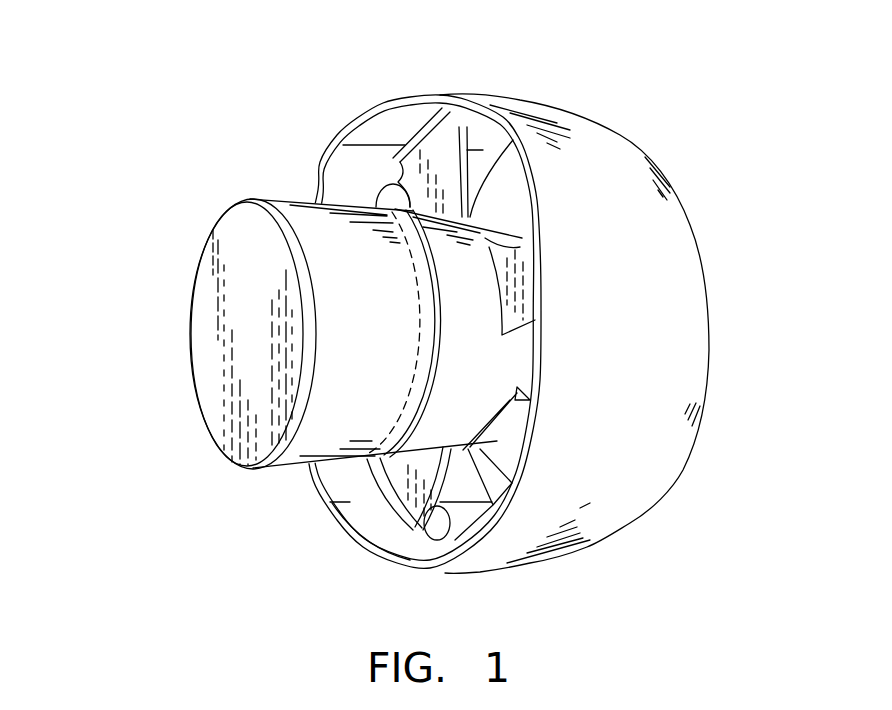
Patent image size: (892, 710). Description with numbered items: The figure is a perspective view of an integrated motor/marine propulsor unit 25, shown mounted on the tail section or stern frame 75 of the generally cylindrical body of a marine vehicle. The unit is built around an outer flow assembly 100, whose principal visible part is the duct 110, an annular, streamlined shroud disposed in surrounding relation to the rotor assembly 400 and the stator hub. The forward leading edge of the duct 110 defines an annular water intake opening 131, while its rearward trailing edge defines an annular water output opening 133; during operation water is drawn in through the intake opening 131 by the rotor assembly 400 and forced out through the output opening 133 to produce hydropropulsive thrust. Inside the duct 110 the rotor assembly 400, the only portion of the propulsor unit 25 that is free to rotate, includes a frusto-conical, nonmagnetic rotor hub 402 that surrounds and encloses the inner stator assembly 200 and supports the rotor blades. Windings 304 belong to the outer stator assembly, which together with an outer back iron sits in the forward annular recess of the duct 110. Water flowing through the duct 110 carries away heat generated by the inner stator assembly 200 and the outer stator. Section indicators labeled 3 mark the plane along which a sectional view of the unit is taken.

The section line 3- 3 is at (416, 31).
The integrated motor/marine propulsor unit 25 is at (596, 78).
The tail section or stern frame 75 is at (343, 433).
The outer flow assembly 100 is at (694, 165).
The duct 110 is at (643, 457).
The annular water intake opening 131 is at (315, 190).
The annular water output opening 133 is at (686, 294).
The inner stator assembly 200 is at (512, 364).
The windings 304 is at (366, 173).
The rotor assembly 400 is at (424, 128).
The rotor hub 402 is at (502, 428).